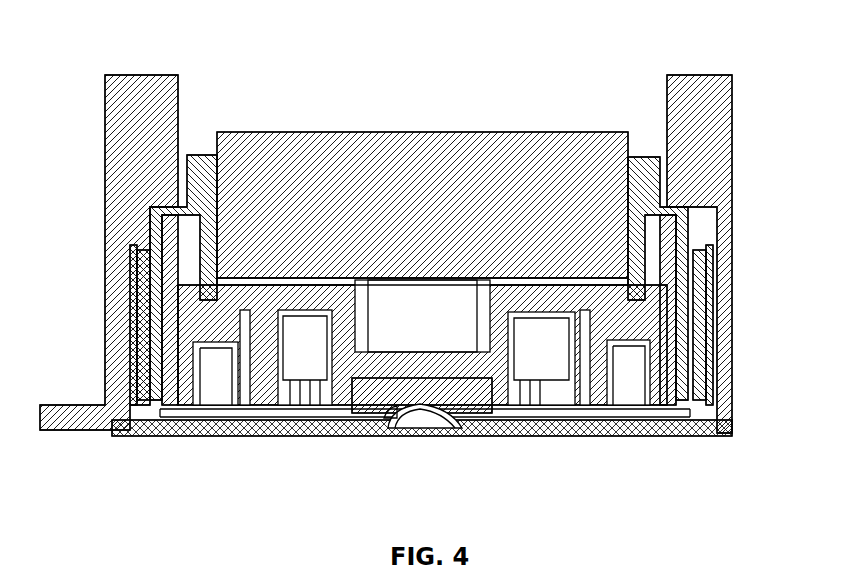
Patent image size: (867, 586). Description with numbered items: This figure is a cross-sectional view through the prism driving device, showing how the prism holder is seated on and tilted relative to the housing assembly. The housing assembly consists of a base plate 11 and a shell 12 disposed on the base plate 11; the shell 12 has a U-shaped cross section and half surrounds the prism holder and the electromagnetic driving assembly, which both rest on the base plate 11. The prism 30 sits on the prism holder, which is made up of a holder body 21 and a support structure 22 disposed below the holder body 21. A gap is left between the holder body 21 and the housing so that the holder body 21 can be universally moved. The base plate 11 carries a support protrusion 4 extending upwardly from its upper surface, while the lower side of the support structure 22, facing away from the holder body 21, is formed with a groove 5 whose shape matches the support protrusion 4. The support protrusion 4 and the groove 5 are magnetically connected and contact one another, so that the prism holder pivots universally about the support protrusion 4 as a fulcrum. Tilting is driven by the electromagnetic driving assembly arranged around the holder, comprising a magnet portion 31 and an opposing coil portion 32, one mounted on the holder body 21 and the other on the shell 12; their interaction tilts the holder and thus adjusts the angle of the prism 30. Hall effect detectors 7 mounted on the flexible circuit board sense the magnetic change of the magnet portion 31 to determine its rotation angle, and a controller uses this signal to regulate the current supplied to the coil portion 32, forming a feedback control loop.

The support protrusion 4 is at (422, 410).
The groove 5 is at (396, 412).
The Hall effect detector 7 is at (130, 322).
The base plate 11 is at (597, 436).
The shell 12 is at (140, 173).
The holder body 21 is at (195, 248).
The support structure 22 is at (355, 408).
The prism 30 is at (520, 155).
The magnet portion 31 is at (170, 378).
The coil portion 32 is at (140, 283).